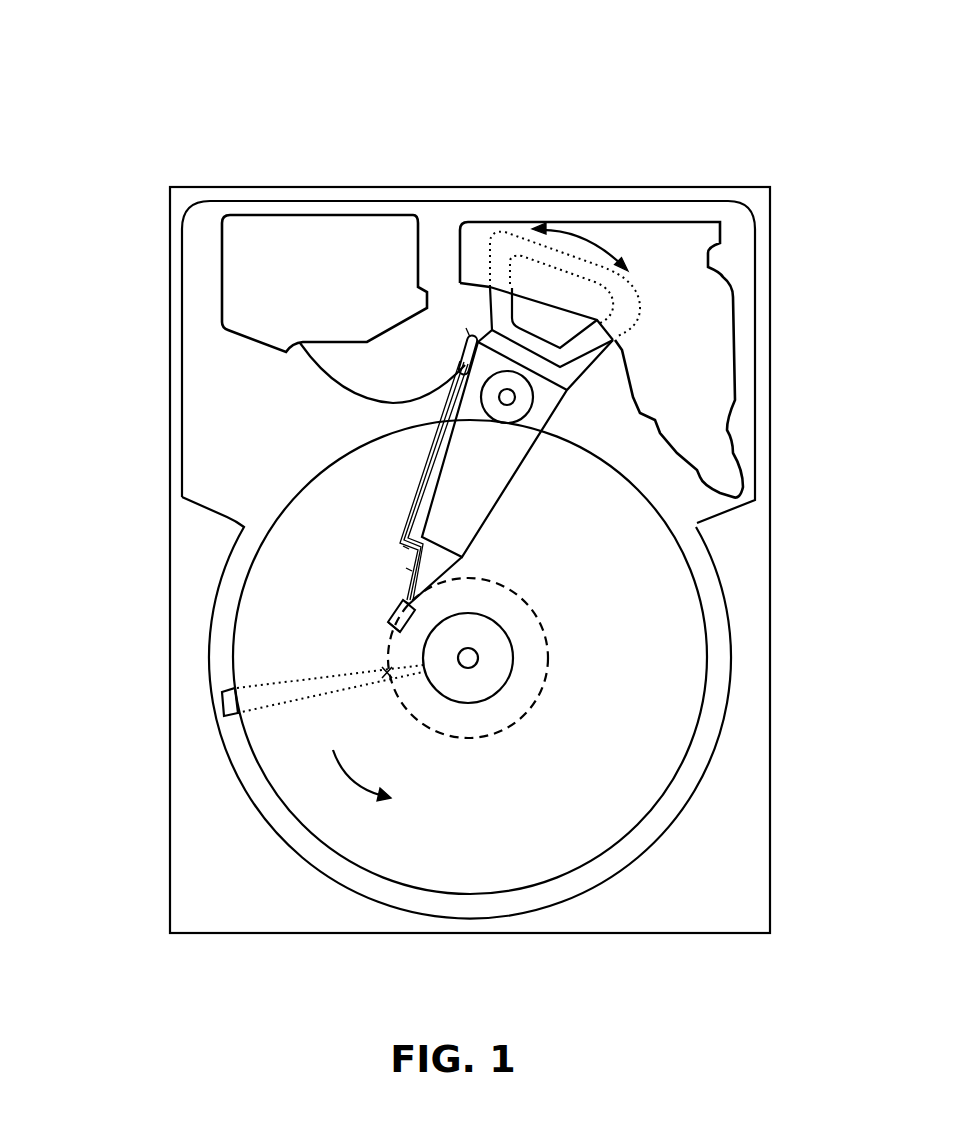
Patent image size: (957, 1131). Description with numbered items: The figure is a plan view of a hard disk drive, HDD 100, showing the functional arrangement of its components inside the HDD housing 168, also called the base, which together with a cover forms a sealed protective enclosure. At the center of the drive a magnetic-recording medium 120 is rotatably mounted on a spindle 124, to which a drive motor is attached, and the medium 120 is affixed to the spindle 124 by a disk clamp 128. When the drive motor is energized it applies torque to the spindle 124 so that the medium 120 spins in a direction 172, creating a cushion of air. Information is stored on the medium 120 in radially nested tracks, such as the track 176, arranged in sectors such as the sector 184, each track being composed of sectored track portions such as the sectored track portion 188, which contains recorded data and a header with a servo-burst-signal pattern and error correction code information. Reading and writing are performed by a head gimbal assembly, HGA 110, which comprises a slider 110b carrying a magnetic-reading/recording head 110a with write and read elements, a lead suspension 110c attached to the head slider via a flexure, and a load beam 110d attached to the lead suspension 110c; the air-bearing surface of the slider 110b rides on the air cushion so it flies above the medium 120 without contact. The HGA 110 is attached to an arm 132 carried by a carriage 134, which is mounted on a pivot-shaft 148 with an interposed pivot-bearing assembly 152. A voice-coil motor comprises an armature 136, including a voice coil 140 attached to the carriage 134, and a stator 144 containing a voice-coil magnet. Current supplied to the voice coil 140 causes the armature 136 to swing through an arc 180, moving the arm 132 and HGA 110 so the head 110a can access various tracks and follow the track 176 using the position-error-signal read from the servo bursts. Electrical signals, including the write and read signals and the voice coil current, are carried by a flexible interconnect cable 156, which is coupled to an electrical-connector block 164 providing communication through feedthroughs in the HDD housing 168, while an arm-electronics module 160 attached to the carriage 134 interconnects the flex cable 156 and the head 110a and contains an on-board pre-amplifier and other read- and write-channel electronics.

The hard disk drive 100 is at (103, 72).
The head gimbal assembly 110 is at (100, 478).
The magnetic-reading/recording head 110a is at (397, 628).
The slider 110b is at (403, 602).
The lead suspension 110c is at (406, 568).
The load beam 110d is at (403, 546).
The magnetic-recording medium 120 is at (640, 612).
The spindle 124 is at (472, 657).
The disk clamp 128 is at (493, 673).
The arm 132 is at (463, 507).
The carriage 134 is at (523, 427).
The armature 136 is at (483, 323).
The voice coil 140 is at (502, 298).
The stator 144 is at (703, 307).
The pivot-shaft 148 is at (514, 398).
The pivot-bearing assembly 152 is at (521, 411).
The flexible interconnect cable 156 is at (350, 381).
The arm-electronics module 160 is at (462, 372).
The electrical-connector block 164 is at (243, 283).
The HDD housing 168 is at (748, 197).
The direction 172 is at (384, 771).
The track 176 is at (545, 623).
The arc 180 is at (583, 227).
The sector 184 is at (222, 690).
The sectored track portion 188 is at (385, 668).